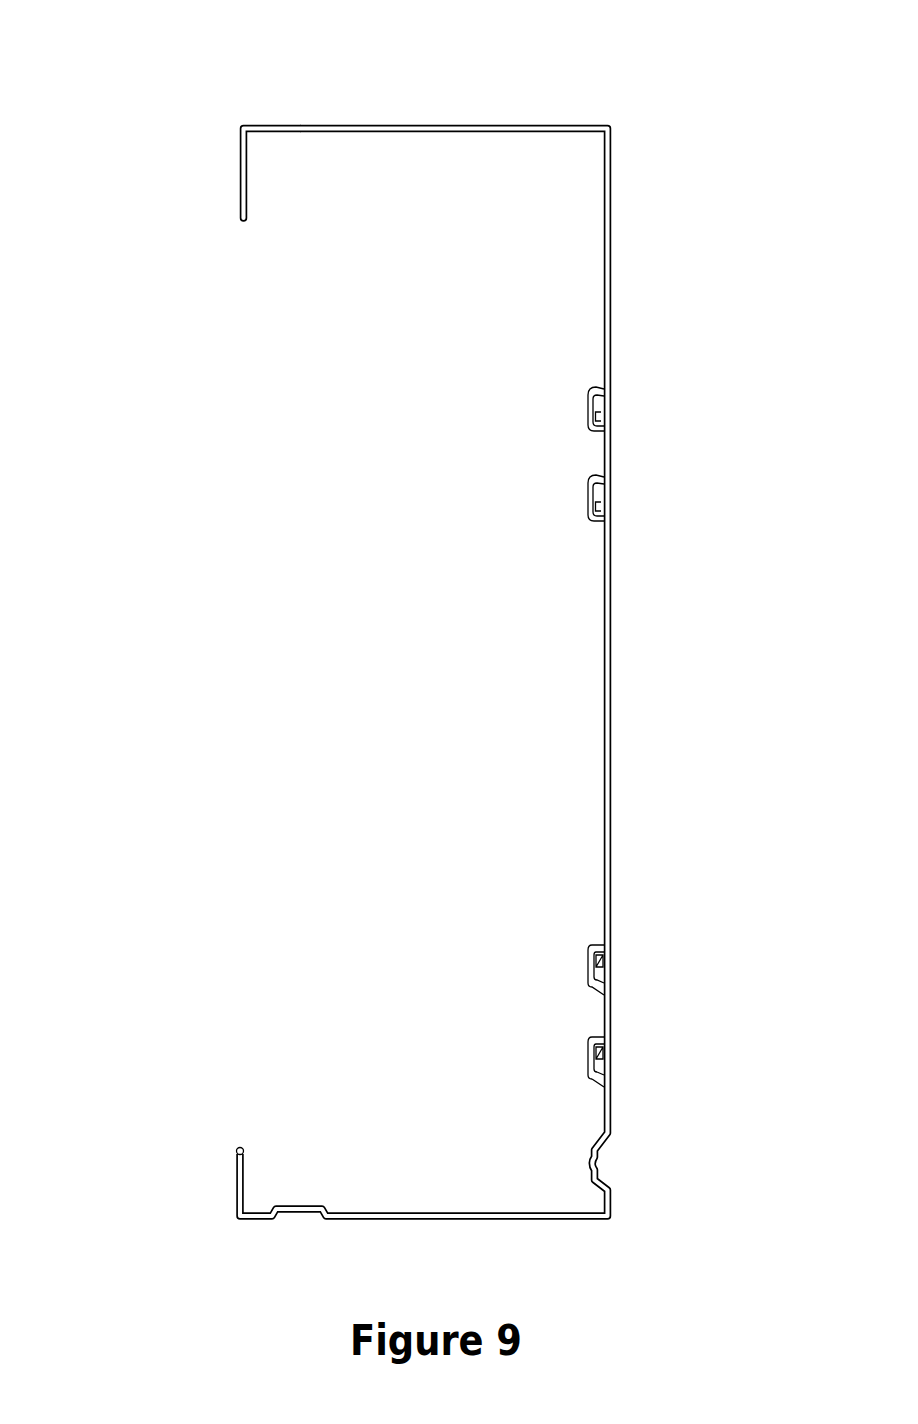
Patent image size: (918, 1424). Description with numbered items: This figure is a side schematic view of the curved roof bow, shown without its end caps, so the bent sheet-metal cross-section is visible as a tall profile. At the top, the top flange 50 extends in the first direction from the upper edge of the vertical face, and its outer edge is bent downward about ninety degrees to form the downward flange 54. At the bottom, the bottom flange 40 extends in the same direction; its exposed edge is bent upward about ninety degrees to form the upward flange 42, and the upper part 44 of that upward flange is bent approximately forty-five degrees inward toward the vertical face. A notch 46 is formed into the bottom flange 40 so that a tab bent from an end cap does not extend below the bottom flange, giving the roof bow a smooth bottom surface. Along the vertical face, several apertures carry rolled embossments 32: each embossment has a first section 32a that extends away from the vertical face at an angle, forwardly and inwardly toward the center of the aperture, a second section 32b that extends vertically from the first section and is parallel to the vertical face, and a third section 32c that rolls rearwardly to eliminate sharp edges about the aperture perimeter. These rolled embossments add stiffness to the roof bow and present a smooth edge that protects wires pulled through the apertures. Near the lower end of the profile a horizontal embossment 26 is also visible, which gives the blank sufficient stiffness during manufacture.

The top flange 50 is at (527, 124).
The downward flange 54 is at (243, 160).
The embossments 32 is at (577, 412).
The first section 32a is at (597, 1088).
The second section 32b is at (597, 1062).
The third section 32c is at (600, 1062).
The horizontal embossment 26 is at (600, 1163).
The upward flange 42 is at (237, 1186).
The upper part 44 is at (237, 1148).
The notch 46 is at (303, 1220).
The bottom flange 40 is at (443, 1222).